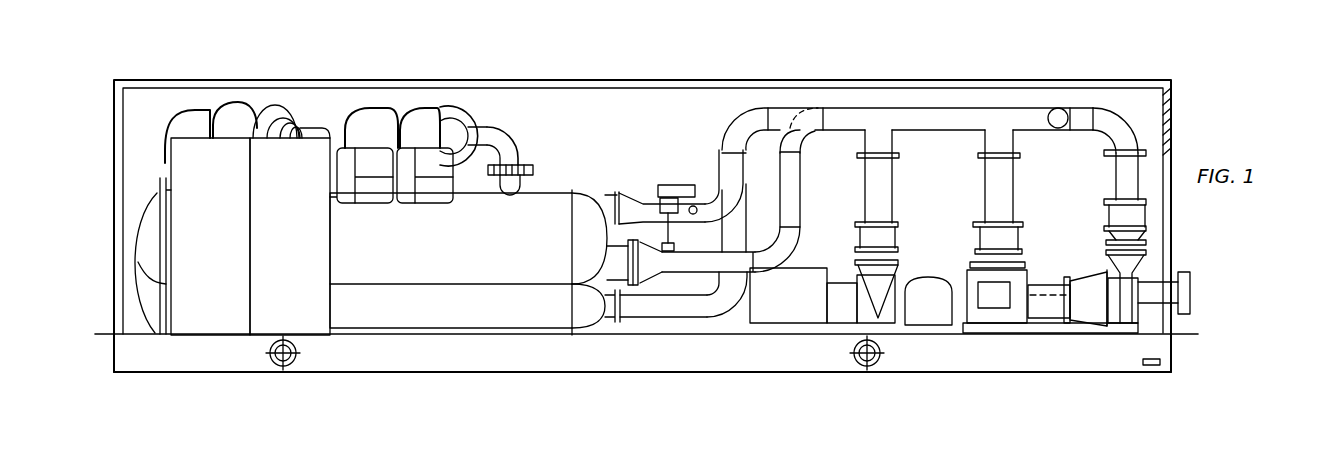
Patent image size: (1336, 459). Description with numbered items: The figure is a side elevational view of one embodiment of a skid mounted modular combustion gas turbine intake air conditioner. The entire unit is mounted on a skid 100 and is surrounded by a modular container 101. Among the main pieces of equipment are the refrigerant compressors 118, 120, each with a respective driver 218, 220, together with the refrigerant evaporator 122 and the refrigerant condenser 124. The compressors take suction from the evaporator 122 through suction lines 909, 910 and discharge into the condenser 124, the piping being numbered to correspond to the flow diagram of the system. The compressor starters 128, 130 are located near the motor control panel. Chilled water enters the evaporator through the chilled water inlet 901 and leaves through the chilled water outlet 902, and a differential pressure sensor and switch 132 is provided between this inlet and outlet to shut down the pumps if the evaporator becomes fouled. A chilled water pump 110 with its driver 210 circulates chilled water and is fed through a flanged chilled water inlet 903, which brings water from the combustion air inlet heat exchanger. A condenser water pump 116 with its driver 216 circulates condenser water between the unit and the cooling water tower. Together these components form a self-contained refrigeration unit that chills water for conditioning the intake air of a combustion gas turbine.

The skid 100 is at (155, 362).
The modular container 101 is at (114, 93).
The driver 218 is at (207, 110).
The refrigerant compressor 118 is at (248, 120).
The suction line 910 is at (337, 148).
The driver 220 is at (385, 120).
The refrigerant compressor 120 is at (430, 117).
The suction line 909 is at (512, 145).
The compressor starter 128 is at (230, 227).
The compressor starter 130 is at (300, 227).
The refrigerant evaporator 122 is at (461, 254).
The refrigerant condenser 124 is at (461, 318).
The differential pressure sensor and switch 132 is at (677, 197).
The chilled water inlet 901 is at (743, 133).
The chilled water outlet 902 is at (802, 152).
The driver 216 is at (801, 309).
The condenser water pump 116 is at (878, 307).
The driver 210 is at (990, 310).
The chilled water pump 110 is at (1120, 307).
The chilled water inlet 903 is at (1190, 290).